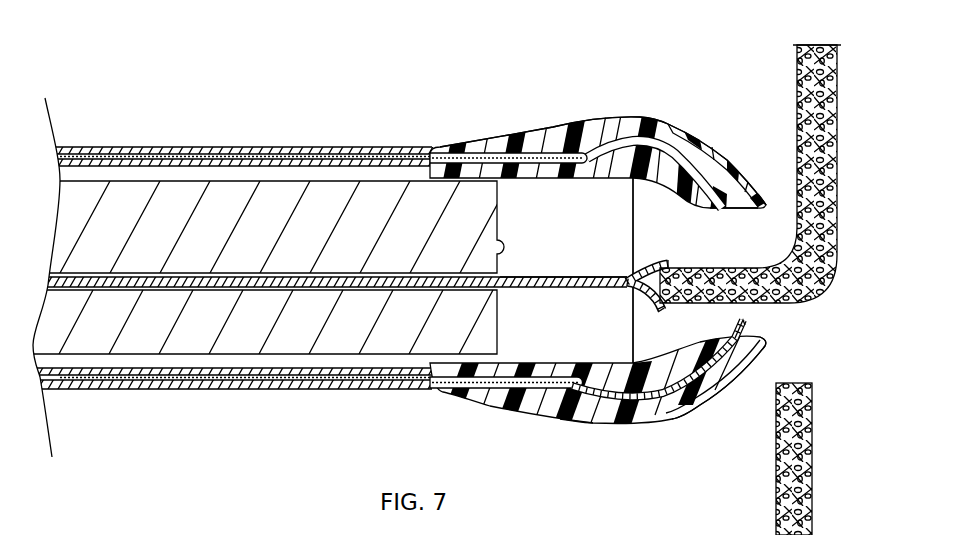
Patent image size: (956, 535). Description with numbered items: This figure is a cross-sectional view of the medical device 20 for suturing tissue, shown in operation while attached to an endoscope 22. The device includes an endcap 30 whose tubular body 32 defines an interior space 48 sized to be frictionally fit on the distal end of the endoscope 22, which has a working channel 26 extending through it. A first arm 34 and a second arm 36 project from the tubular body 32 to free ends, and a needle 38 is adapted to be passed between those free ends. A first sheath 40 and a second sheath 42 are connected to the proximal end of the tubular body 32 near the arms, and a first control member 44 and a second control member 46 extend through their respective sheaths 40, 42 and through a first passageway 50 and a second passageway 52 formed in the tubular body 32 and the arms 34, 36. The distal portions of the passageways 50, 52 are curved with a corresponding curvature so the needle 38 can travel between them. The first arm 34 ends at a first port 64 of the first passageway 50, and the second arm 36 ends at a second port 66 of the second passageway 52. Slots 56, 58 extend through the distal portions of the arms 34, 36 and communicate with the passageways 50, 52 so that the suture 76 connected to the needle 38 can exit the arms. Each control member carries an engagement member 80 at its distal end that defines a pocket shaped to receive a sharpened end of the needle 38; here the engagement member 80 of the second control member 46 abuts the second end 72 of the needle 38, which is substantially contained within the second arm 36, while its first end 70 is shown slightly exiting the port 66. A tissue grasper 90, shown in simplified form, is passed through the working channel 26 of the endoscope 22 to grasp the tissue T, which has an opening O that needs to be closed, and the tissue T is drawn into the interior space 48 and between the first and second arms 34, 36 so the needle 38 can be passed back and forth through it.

The medical device 20 is at (127, 70).
The endoscope 22 is at (240, 190).
The working channel 26 is at (262, 288).
The endcap 30 is at (627, 66).
The tubular body 32 is at (512, 142).
The first arm 34 is at (638, 123).
The second arm 36 is at (648, 418).
The needle 38 is at (656, 348).
The first sheath 40 is at (122, 147).
The second sheath 42 is at (137, 389).
The first control member 44 is at (180, 150).
The second control member 46 is at (192, 389).
The interior space 48 is at (666, 231).
The first passageway 50 is at (690, 137).
The second passageway 52 is at (742, 362).
The first slot 56 is at (763, 190).
The second slot 58 is at (755, 372).
The first port 64 is at (732, 210).
The second port 66 is at (727, 337).
The first end of needle 70 is at (747, 338).
The second end of needle 72 is at (586, 412).
The suture 76 is at (625, 308).
The engagement member 80 is at (580, 380).
The tissue grasper 90 is at (518, 284).
The tissue T is at (797, 293).
The opening O is at (806, 371).